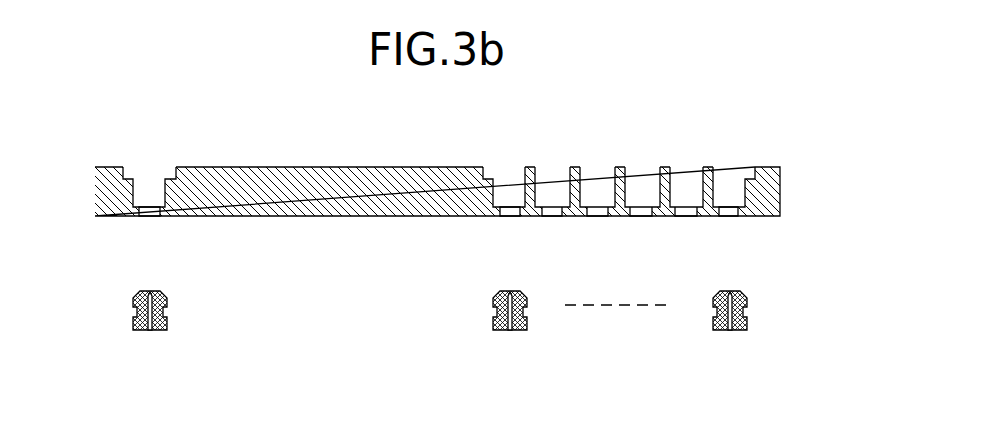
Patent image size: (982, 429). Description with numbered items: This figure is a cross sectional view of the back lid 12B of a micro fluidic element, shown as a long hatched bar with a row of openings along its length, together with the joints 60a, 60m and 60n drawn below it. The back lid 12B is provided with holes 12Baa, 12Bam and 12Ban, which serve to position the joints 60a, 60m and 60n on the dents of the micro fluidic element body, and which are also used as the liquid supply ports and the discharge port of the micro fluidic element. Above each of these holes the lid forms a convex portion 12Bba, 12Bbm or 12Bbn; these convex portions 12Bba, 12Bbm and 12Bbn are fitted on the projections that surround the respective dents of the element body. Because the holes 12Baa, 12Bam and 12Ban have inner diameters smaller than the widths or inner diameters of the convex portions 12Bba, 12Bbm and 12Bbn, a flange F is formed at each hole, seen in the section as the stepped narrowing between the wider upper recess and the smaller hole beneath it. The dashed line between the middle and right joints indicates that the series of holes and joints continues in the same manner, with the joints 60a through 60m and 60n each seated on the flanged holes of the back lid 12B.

The back lid 12B is at (300, 168).
The convex portion 12Bbn is at (148, 178).
The convex portion 12Bbm is at (510, 177).
The convex portion 12Bba is at (731, 177).
The flange F is at (642, 197).
The hole 12Ban is at (150, 217).
The hole 12Bam is at (510, 217).
The hole 12Baa is at (730, 217).
The joint 60n is at (140, 331).
The joint 60m is at (500, 331).
The joint 60a is at (720, 331).